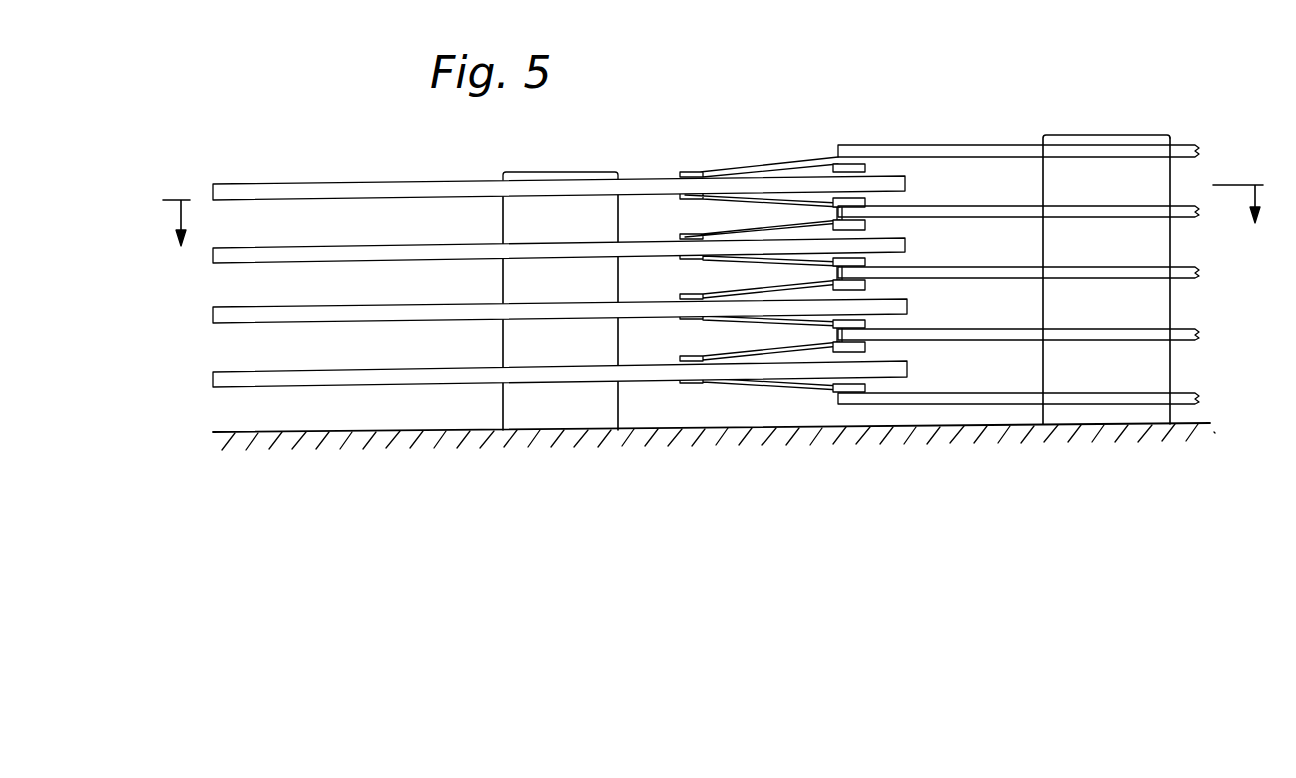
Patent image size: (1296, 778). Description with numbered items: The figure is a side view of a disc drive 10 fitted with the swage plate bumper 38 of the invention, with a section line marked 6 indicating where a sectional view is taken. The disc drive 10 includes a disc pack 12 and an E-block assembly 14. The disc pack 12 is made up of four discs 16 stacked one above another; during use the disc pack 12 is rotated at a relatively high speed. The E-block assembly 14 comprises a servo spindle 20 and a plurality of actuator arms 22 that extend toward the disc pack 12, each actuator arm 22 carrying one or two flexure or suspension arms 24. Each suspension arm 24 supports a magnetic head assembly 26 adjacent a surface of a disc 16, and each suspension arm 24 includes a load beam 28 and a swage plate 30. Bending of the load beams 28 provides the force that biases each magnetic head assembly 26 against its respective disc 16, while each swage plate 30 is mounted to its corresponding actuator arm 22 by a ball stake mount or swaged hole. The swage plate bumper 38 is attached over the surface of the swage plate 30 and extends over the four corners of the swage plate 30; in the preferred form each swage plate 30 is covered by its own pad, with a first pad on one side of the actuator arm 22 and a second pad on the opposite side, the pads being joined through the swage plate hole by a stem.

The section line 6- 6 is at (715, 192).
The disc drive assembly 10 is at (426, 152).
The disc pack 12 is at (315, 180).
The E-block assembly 14 is at (1045, 122).
The disc 16 is at (407, 200).
The servo spindle 20 is at (1155, 300).
The actuator arm 22 is at (945, 145).
The suspension arm 24 is at (716, 204).
The magnetic head assembly 26 is at (691, 358).
The load beam 28 is at (753, 290).
The swage plate 30 is at (868, 203).
The swage plate bumper 38 is at (868, 263).